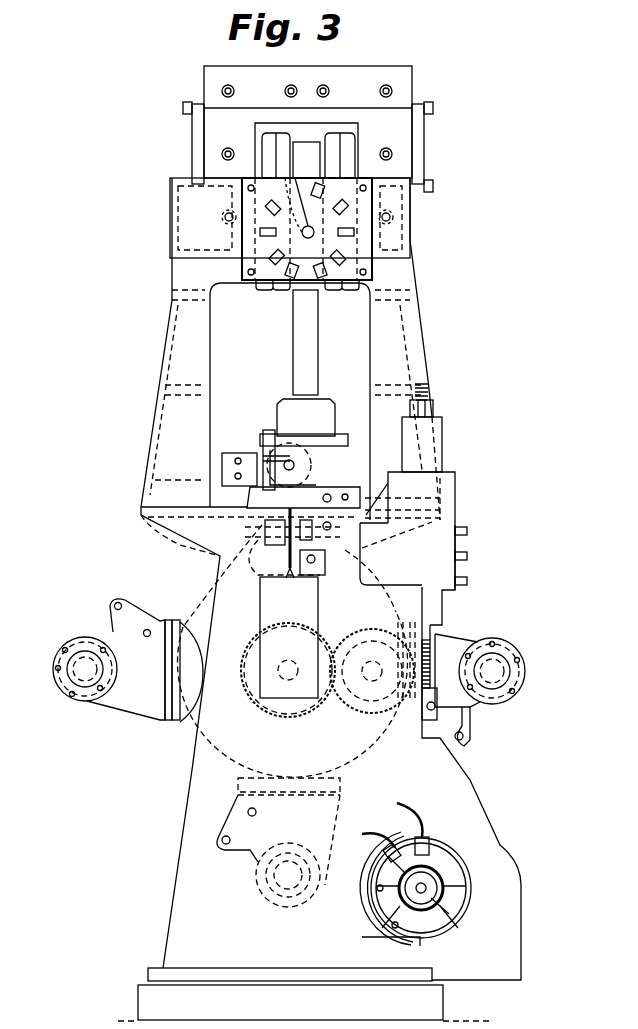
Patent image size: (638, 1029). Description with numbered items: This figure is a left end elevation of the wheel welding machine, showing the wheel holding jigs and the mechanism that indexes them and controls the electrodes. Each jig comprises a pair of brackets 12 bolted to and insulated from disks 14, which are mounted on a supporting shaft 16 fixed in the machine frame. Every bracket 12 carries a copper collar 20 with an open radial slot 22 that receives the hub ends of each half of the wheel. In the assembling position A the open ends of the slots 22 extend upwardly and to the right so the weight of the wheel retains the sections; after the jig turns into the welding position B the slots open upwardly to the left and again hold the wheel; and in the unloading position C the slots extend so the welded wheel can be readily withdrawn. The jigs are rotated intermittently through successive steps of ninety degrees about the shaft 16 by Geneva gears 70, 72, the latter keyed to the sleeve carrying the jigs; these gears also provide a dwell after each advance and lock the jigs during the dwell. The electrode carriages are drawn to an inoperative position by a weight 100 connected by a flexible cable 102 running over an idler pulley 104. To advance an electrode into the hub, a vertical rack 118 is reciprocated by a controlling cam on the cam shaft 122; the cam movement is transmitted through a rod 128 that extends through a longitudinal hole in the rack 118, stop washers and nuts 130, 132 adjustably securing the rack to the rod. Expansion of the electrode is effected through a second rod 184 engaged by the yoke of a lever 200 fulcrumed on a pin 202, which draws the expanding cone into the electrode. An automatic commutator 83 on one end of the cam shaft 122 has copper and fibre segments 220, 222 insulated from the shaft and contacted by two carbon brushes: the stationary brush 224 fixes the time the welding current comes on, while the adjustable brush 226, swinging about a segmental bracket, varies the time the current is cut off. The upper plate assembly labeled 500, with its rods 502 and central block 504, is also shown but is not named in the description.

The bracket 12 is at (205, 548).
The disk 14 is at (185, 740).
The supporting shaft 16 is at (291, 662).
The collar 20 is at (503, 700).
The radial slot 22 is at (512, 660).
The Geneva gear 70 is at (366, 632).
The Geneva gear 72 is at (270, 712).
The automatic commutator 83 is at (442, 880).
The weight 100 is at (289, 637).
The flexible cable 102 is at (290, 562).
The idler pulley 104 is at (296, 518).
The vertical rack 118 is at (420, 456).
The cam shaft 122 is at (426, 882).
The rod 128 is at (421, 388).
The stop washer and nut 130 is at (432, 632).
The stop washer and nut 132 is at (434, 406).
The second rod 184 is at (292, 460).
The lever 200 is at (305, 472).
The pin 202 is at (265, 475).
The copper segment 220 is at (385, 925).
The fibre segment 222 is at (446, 902).
The stationary brush 224 is at (430, 836).
The adjustable brush 226 is at (388, 860).
The plate 500 is at (352, 240).
The rod 502 is at (276, 152).
The rod 504 is at (308, 140).
The assembling position A is at (492, 636).
The welding position B is at (248, 446).
The unloading position C is at (60, 648).